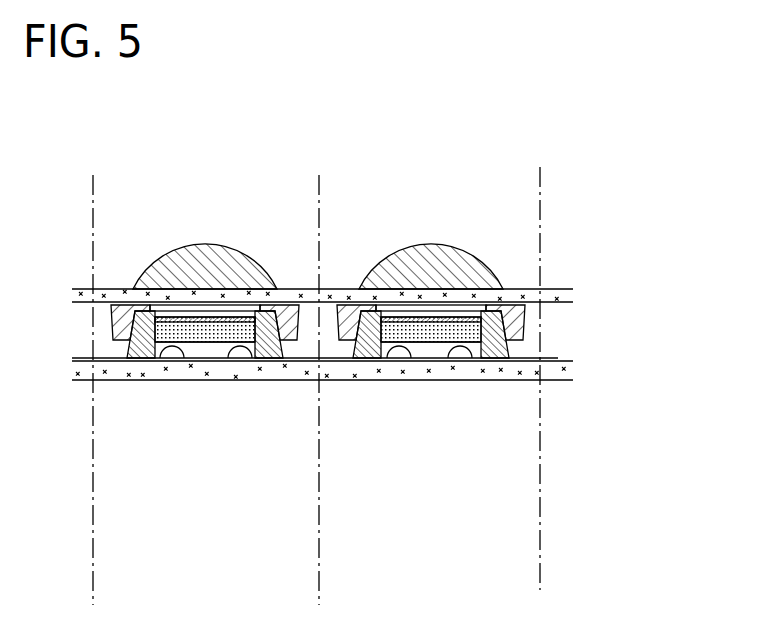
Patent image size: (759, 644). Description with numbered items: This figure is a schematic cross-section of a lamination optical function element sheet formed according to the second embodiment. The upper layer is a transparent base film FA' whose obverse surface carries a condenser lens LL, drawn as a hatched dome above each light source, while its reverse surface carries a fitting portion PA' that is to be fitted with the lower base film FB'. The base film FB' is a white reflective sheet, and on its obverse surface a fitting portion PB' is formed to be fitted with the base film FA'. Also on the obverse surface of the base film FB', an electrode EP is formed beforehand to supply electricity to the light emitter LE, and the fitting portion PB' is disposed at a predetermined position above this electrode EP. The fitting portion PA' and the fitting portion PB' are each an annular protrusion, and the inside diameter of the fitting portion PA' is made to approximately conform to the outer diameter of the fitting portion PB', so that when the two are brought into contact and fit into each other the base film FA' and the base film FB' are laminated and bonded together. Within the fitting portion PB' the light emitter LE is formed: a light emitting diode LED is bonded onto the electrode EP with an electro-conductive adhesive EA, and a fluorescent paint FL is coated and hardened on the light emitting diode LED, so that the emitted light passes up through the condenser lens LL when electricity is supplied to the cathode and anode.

The condenser lens LL is at (433, 245).
The fluorescent paint FL is at (237, 305).
The transparent base film FA' is at (386, 254).
The fitting portion PA' is at (407, 310).
The fitting portion PB' is at (416, 336).
The base film FB' is at (382, 397).
The light emitter LE is at (209, 345).
The light emitting diode LED is at (218, 345).
The electrode EP is at (310, 360).
The electro-conductive adhesive EA is at (459, 352).